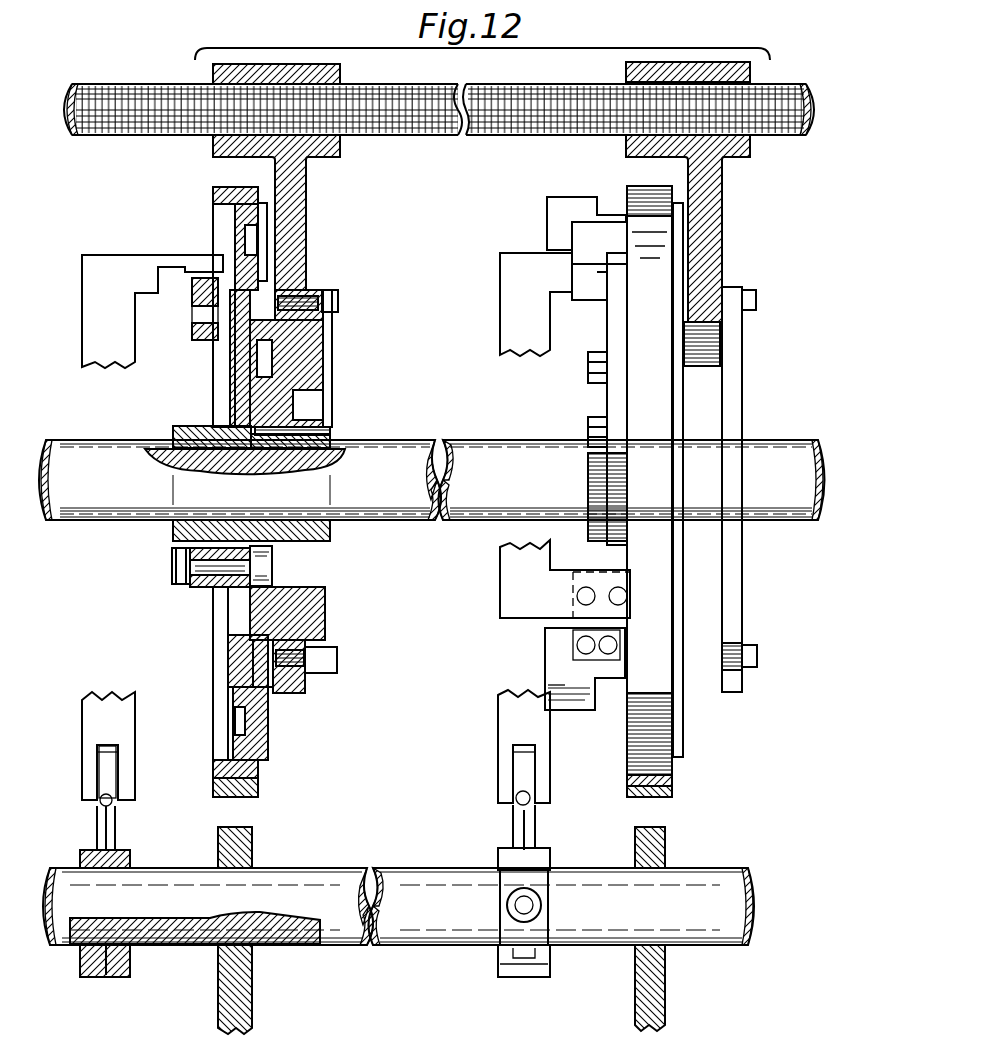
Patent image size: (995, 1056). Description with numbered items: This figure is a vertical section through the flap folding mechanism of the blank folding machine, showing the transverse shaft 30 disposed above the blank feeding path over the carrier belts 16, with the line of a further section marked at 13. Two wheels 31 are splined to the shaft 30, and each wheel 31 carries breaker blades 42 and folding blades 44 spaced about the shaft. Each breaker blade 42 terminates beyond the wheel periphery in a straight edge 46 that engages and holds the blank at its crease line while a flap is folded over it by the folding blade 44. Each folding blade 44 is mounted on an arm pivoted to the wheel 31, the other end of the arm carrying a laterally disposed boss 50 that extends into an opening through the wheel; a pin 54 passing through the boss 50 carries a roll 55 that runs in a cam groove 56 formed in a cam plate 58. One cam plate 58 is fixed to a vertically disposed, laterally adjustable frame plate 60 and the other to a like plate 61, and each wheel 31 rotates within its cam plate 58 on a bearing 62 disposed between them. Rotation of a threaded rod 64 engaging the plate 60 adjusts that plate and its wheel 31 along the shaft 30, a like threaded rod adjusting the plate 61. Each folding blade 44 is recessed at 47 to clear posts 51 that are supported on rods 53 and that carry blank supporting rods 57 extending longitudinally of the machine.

The section line 13- 13 is at (445, 999).
The carrier belts 16 is at (258, 790).
The shaft 30 is at (432, 483).
The wheel 31 is at (200, 202).
The breaker blade 42 is at (550, 212).
The folding blade 44 is at (95, 332).
The straight edge 46 is at (568, 710).
The recess 47 is at (110, 772).
The boss 50 is at (235, 592).
The post 51 is at (118, 826).
The rod 53 is at (305, 890).
The pin 54 is at (170, 562).
The roll 55 is at (266, 564).
The cam groove 56 is at (265, 358).
The blank supporting rod 57 is at (530, 802).
The cam plate 58 is at (312, 374).
The plate 60 is at (300, 234).
The plate 61 is at (720, 228).
The bearing 62 is at (298, 422).
The rod 64 is at (790, 140).